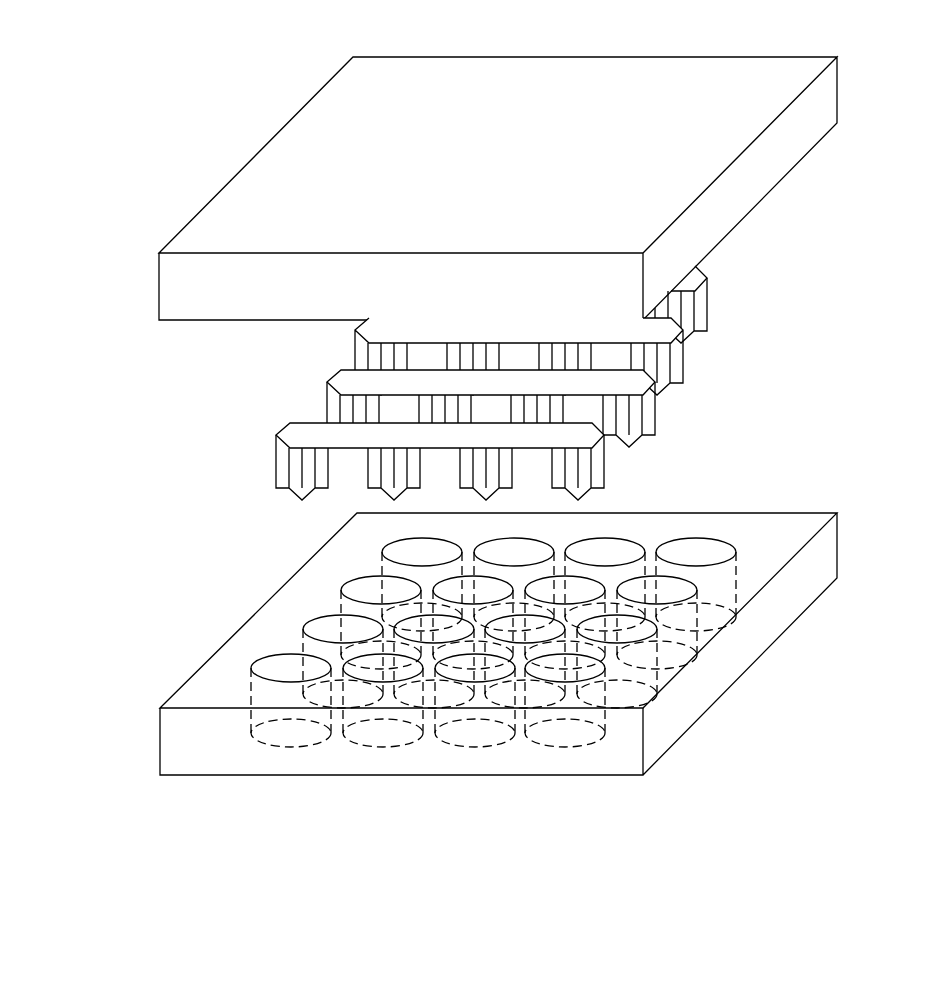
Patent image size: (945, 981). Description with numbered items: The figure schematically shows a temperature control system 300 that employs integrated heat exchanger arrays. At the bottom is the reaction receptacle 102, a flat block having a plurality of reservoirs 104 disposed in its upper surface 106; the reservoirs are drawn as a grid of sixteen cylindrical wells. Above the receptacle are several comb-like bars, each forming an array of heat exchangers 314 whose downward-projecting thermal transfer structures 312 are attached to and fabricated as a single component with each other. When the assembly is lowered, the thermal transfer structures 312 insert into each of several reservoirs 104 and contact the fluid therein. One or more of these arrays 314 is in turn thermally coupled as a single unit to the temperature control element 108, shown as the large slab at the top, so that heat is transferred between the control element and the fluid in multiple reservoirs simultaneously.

The system 300 is at (132, 108).
The temperature control element 108 is at (813, 107).
The thermal transfer structures 312 is at (463, 383).
The array of heat exchangers 314 is at (383, 435).
The upper surface 106 is at (802, 523).
The reaction receptacle 102 is at (547, 596).
The reservoirs 104 is at (278, 668).